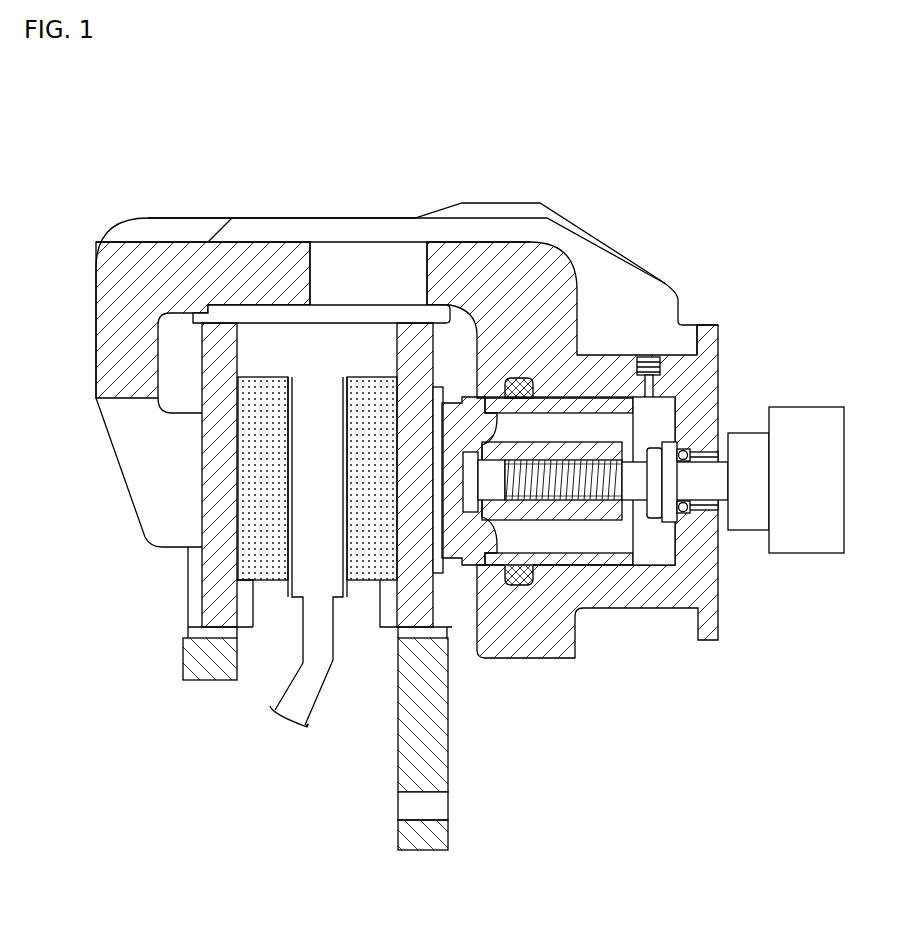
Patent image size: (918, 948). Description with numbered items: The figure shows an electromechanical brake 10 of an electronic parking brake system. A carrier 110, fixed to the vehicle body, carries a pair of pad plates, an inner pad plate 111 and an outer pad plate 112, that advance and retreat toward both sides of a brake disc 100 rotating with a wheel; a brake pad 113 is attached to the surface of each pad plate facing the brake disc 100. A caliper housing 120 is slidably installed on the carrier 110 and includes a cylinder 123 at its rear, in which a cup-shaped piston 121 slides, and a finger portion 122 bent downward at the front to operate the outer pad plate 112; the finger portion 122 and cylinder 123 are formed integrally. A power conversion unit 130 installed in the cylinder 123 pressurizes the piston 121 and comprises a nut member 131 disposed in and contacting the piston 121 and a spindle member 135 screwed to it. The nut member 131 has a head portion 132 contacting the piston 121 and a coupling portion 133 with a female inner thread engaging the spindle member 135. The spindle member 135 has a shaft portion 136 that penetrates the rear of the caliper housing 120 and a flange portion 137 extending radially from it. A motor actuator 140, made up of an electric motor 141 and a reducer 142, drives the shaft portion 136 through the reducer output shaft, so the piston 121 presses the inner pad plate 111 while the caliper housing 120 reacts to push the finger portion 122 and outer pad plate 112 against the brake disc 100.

The electromechanical brake 10 is at (478, 102).
The brake disc 100 is at (305, 697).
The carrier 110 is at (409, 770).
The inner pad plate 111 is at (398, 625).
The outer pad plate 112 is at (206, 573).
The brake pad 113 is at (270, 585).
The caliper housing 120 is at (389, 394).
The piston 121 is at (461, 560).
The finger portion 122 is at (124, 452).
The cylinder 123 is at (704, 330).
The power conversion unit 130 is at (602, 493).
The nut member 131 is at (558, 605).
The head portion 132 is at (507, 547).
The coupling portion 133 is at (574, 516).
The spindle member 135 is at (692, 607).
The shaft portion 136 is at (685, 489).
The flange portion 137 is at (653, 504).
The motor actuator 140 is at (782, 429).
The electric motor 141 is at (795, 412).
The reducer 142 is at (757, 436).